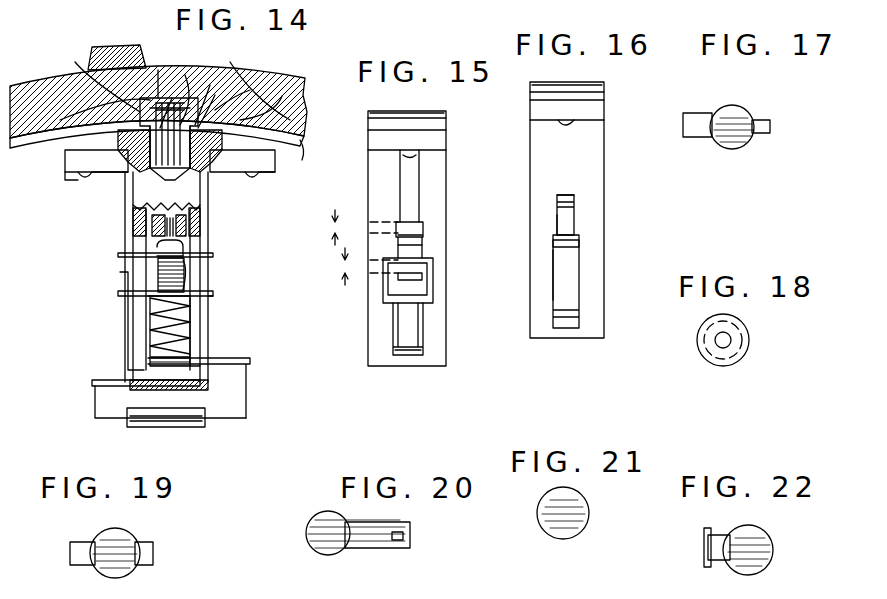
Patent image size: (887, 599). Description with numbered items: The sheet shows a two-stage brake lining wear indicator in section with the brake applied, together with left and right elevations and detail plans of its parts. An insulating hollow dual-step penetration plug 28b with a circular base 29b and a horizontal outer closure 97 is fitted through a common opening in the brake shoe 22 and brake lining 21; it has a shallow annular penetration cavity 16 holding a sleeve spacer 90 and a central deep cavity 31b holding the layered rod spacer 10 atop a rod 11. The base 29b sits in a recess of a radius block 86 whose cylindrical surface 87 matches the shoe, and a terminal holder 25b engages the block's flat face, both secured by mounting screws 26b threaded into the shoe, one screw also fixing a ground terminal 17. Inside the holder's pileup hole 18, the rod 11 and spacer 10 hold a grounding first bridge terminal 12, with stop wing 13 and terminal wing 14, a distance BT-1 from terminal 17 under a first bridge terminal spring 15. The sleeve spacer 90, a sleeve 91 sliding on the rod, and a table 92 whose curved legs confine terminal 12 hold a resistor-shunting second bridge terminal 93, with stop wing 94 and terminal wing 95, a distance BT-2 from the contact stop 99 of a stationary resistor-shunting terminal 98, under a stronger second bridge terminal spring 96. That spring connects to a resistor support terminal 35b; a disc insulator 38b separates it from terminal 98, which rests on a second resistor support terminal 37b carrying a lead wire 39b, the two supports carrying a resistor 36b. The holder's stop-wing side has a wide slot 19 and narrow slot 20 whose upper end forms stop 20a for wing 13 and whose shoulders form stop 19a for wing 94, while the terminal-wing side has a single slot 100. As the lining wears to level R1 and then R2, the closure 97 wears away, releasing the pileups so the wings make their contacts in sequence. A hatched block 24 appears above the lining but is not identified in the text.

In FIG. 14, the rod spacer 10 is at (185, 75).
In FIG. 14, the rod 11 is at (170, 170).
In FIG. 14, the first bridge terminal 12 is at (157, 250).
In FIG. 17, the first bridge terminal 12 is at (748, 112).
In FIG. 14, the stop wing 13 is at (195, 260).
In FIG. 16, the stop wing 13 is at (557, 220).
In FIG. 17, the stop wing 13 is at (770, 120).
In FIG. 14, the terminal wing 14 is at (120, 255).
In FIG. 15, the terminal wing 14 is at (410, 232).
In FIG. 17, the terminal wing 14 is at (683, 113).
In FIG. 14, the first bridge terminal spring 15 is at (184, 275).
In FIG. 14, the penetration cavity 16 is at (250, 90).
In FIG. 14, the ground terminal 17 is at (125, 210).
In FIG. 15, the ground terminal 17 is at (406, 177).
In FIG. 14, the element pileup hole 18 is at (190, 325).
In FIG. 16, the wide vertical slot 19 is at (570, 285).
In FIG. 16, the stop 19a is at (579, 232).
In FIG. 16, the narrow vertical slot 20 is at (574, 218).
In FIG. 16, the stop 20a is at (570, 195).
In FIG. 14, the brake lining 21 is at (305, 78).
In FIG. 14, the brake shoe 22 is at (306, 156).
In FIG. 14, the block 24 is at (104, 48).
In FIG. 14, the terminal holder 25b is at (62, 180).
In FIG. 15, the terminal holder 25b is at (378, 146).
In FIG. 16, the terminal holder 25b is at (600, 110).
In FIG. 14, the mounting screw 26b is at (232, 210).
In FIG. 16, the mounting screw 26b is at (562, 126).
In FIG. 14, the penetration plug 28b is at (158, 70).
In FIG. 14, the circular base 29b is at (105, 105).
In FIG. 14, the deep cavity 31b is at (210, 85).
In FIG. 14, the resistor support terminal 35b is at (250, 360).
In FIG. 20, the resistor support terminal 35b is at (308, 548).
In FIG. 14, the resistor 36b is at (175, 427).
In FIG. 14, the resistor support terminal 37b is at (92, 383).
In FIG. 15, the resistor support terminal 37b is at (412, 356).
In FIG. 14, the disc insulator 38b is at (205, 372).
In FIG. 21, the disc insulator 38b is at (585, 502).
In FIG. 14, the lead wire 39b is at (95, 395).
In FIG. 14, the radius block 86 is at (272, 160).
In FIG. 15, the radius block 86 is at (368, 115).
In FIG. 16, the radius block 86 is at (530, 88).
In FIG. 14, the cylindrical surface 87 is at (28, 150).
In FIG. 15, the cylindrical surface 87 is at (424, 95).
In FIG. 16, the cylindrical surface 87 is at (590, 82).
In FIG. 14, the sleeve spacer 90 is at (215, 95).
In FIG. 14, the sleeve 91 is at (92, 78).
In FIG. 14, the table 92 is at (182, 243).
In FIG. 18, the table 92 is at (742, 322).
In FIG. 14, the second bridge terminal 93 is at (162, 300).
In FIG. 19, the second bridge terminal 93 is at (118, 528).
In FIG. 14, the stop wing 94 is at (210, 300).
In FIG. 16, the stop wing 94 is at (553, 262).
In FIG. 19, the stop wing 94 is at (153, 543).
In FIG. 14, the terminal wing 95 is at (118, 292).
In FIG. 15, the terminal wing 95 is at (415, 285).
In FIG. 19, the terminal wing 95 is at (75, 542).
In FIG. 14, the second bridge terminal spring 96 is at (230, 340).
In FIG. 14, the outer closure 97 is at (166, 98).
In FIG. 14, the resistor-shunting terminal 98 is at (150, 352).
In FIG. 15, the resistor-shunting terminal 98 is at (383, 300).
In FIG. 22, the resistor-shunting terminal 98 is at (768, 535).
In FIG. 14, the terminal contact stop 99 is at (118, 272).
In FIG. 15, the terminal contact stop 99 is at (420, 250).
In FIG. 15, the terminal wing slot 100 is at (422, 244).
In FIG. 14, the first wear level R1 is at (259, 91).
In FIG. 14, the second wear level R2 is at (261, 105).
In FIG. 14, the first spacing distance BT-1 is at (300, 207).
In FIG. 15, the first spacing distance BT-1 is at (325, 232).
In FIG. 14, the second spacing distance BT-2 is at (297, 269).
In FIG. 15, the second spacing distance BT-2 is at (340, 265).